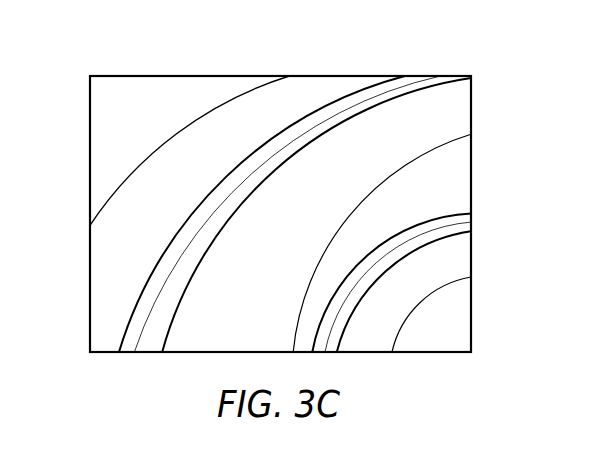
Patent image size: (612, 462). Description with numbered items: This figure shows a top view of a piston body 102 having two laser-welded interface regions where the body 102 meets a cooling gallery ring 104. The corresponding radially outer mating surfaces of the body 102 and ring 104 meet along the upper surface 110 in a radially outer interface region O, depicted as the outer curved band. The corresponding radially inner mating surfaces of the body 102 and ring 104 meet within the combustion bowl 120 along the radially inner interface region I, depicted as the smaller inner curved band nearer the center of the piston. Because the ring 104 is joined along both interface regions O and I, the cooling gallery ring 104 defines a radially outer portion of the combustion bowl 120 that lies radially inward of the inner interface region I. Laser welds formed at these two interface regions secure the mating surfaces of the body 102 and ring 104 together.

The body 102 is at (120, 220).
The cooling gallery ring 104 is at (317, 193).
The upper surface 110 is at (292, 190).
The combustion bowl 120 is at (429, 306).
The radially outer interface region O is at (220, 183).
The radially inner interface region I is at (353, 290).